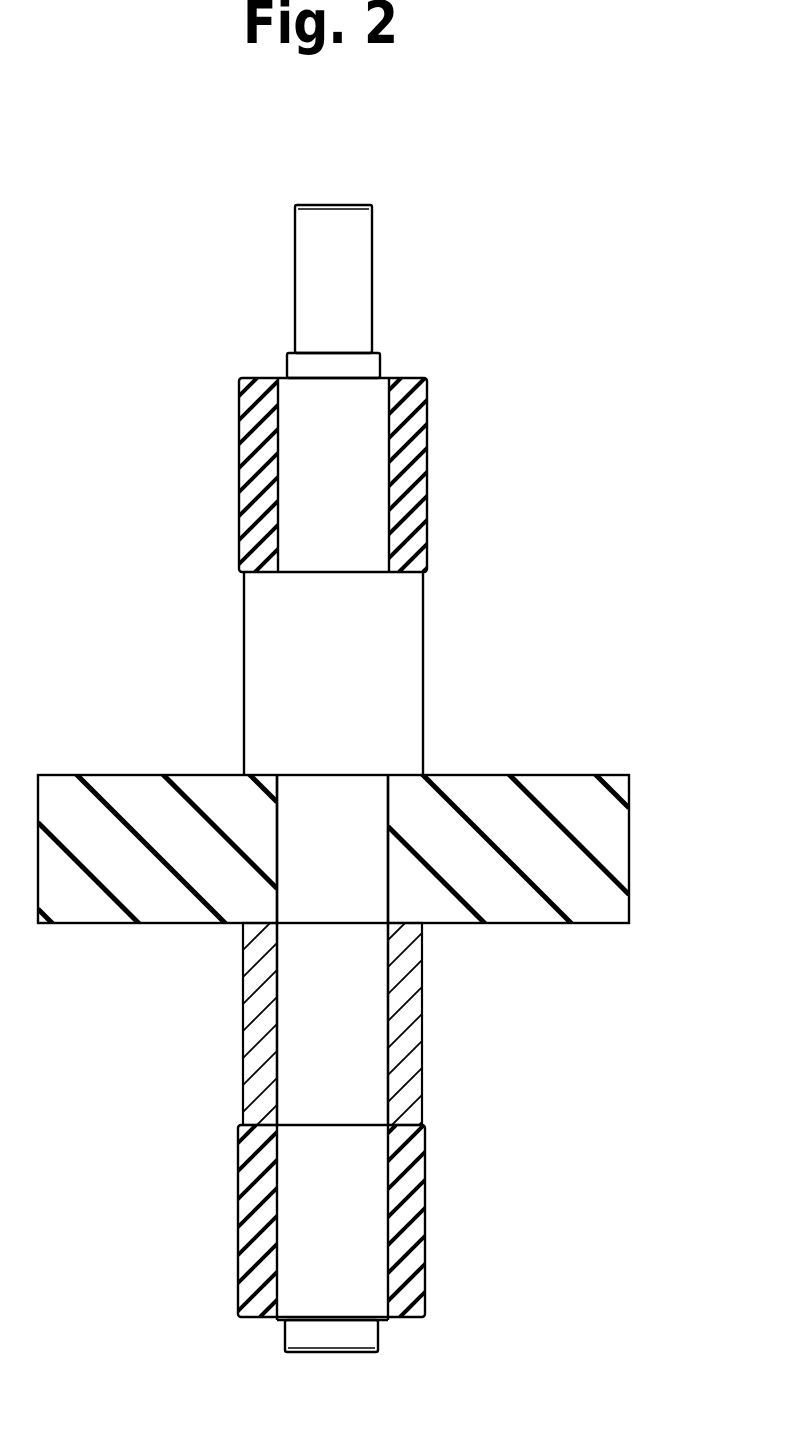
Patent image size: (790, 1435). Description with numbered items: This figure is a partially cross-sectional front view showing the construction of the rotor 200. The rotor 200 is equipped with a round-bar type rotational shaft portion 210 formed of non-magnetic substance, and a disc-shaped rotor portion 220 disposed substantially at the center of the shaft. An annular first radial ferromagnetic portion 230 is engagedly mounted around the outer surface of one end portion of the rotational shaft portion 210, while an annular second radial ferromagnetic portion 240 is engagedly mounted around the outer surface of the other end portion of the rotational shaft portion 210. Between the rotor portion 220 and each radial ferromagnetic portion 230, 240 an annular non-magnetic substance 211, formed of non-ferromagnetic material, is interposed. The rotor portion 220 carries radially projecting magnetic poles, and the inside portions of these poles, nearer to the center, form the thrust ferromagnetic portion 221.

The rotor 200 is at (375, 272).
The rotational shaft portion 210 is at (372, 305).
The annular non-magnetic substance 211 is at (243, 1020).
The rotor portion 220 is at (572, 772).
The thrust ferromagnetic portion 221 is at (503, 900).
The first radial ferromagnetic portion 230 is at (425, 1223).
The second radial ferromagnetic portion 240 is at (427, 420).